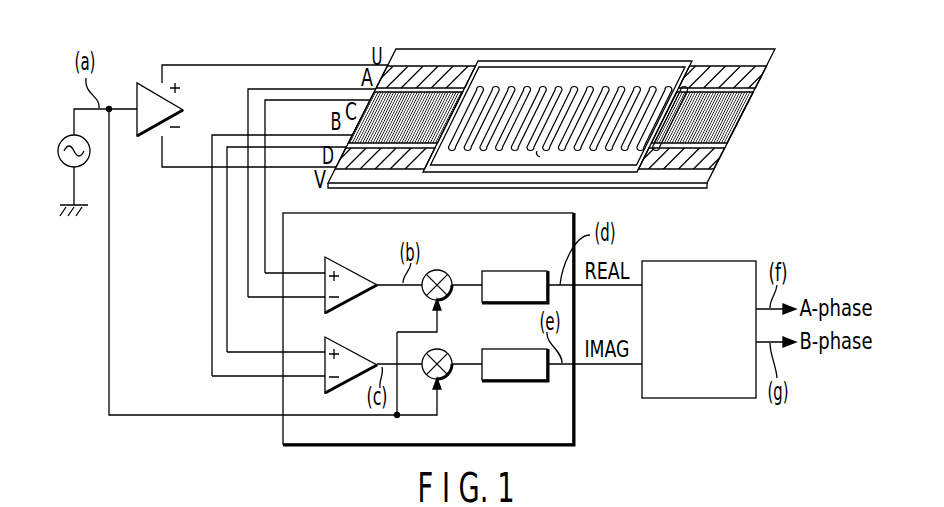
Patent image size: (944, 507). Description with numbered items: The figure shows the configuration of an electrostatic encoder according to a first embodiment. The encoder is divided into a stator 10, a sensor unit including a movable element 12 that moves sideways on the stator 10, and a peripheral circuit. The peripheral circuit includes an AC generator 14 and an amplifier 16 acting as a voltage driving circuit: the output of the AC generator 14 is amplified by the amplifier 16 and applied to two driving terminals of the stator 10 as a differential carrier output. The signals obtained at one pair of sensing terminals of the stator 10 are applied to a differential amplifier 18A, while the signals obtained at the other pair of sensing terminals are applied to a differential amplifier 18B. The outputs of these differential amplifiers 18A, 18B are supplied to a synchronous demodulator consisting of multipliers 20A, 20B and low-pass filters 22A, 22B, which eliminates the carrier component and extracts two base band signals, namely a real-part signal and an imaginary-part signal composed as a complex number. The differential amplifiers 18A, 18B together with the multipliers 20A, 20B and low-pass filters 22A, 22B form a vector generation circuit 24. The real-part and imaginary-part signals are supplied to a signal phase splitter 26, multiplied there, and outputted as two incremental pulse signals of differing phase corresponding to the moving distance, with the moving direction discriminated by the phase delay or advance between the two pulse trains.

The stator 10 is at (735, 52).
The movable element 12 is at (532, 67).
The AC generator 14 is at (72, 134).
The amplifier 16 is at (149, 85).
The differential amplifier 18A is at (347, 265).
The differential amplifier 18B is at (358, 343).
The multiplier 20A is at (438, 270).
The multiplier 20B is at (450, 379).
The low-pass filter 22A is at (518, 270).
The low-pass filter 22B is at (522, 381).
The vector generation circuit 24 is at (575, 420).
The signal phase splitter 26 is at (698, 260).